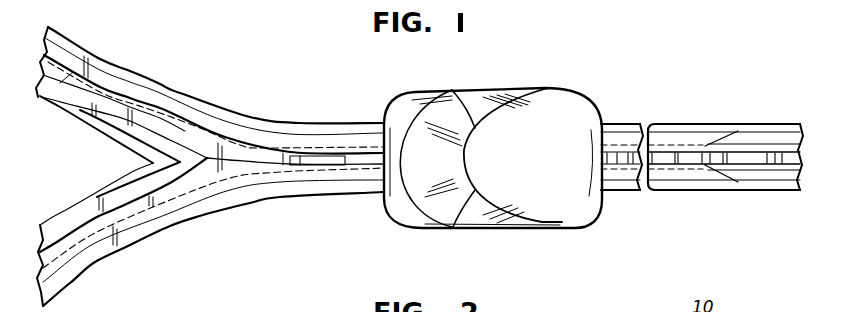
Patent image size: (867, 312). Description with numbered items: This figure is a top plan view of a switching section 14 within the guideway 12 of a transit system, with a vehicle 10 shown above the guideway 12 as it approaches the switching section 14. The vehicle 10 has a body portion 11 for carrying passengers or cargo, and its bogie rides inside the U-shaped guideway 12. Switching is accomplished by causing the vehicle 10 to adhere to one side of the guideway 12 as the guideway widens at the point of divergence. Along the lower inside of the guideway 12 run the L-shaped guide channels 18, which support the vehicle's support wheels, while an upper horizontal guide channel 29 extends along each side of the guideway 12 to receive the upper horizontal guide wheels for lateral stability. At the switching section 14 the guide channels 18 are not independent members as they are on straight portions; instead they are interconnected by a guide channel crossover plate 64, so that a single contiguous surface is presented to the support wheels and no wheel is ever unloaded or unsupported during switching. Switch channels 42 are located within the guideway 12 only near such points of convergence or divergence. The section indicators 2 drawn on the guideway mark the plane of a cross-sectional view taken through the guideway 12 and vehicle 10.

The vehicle 10 is at (598, 65).
The body portion 11 is at (557, 100).
The guideway 12 is at (731, 121).
The switching section 14 is at (197, 101).
The guide channels 18 is at (756, 172).
The upper horizontal guide channel 29 is at (760, 133).
The switch channels 42 is at (110, 80).
The guide channel crossover plate 64 is at (233, 160).
The section line for FIG. 2 is at (355, 190).